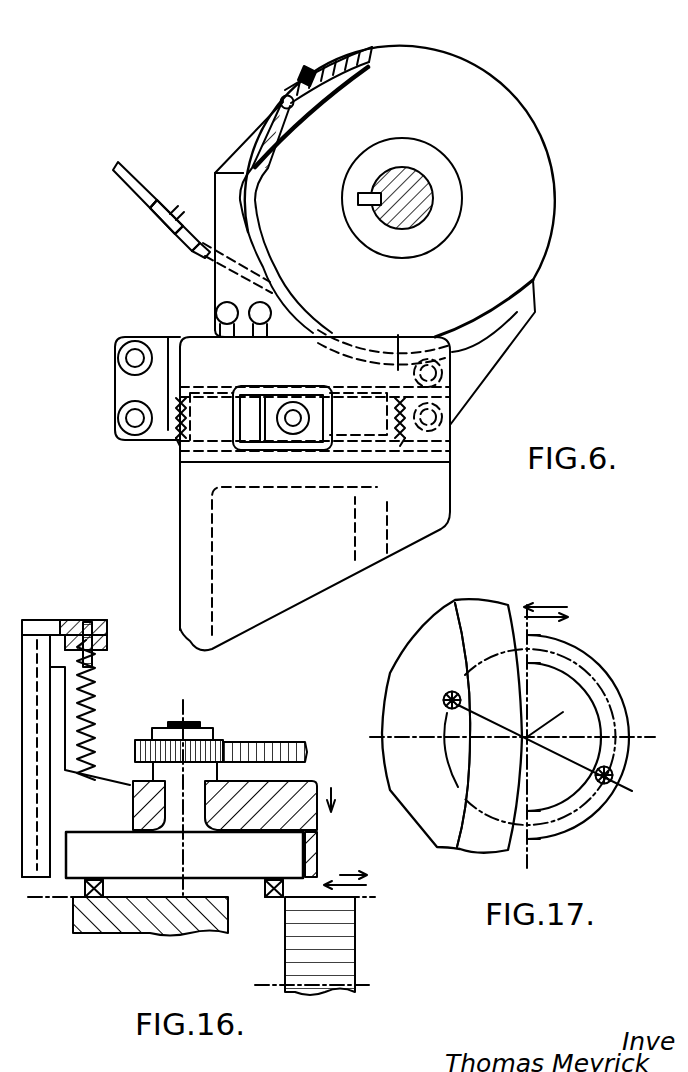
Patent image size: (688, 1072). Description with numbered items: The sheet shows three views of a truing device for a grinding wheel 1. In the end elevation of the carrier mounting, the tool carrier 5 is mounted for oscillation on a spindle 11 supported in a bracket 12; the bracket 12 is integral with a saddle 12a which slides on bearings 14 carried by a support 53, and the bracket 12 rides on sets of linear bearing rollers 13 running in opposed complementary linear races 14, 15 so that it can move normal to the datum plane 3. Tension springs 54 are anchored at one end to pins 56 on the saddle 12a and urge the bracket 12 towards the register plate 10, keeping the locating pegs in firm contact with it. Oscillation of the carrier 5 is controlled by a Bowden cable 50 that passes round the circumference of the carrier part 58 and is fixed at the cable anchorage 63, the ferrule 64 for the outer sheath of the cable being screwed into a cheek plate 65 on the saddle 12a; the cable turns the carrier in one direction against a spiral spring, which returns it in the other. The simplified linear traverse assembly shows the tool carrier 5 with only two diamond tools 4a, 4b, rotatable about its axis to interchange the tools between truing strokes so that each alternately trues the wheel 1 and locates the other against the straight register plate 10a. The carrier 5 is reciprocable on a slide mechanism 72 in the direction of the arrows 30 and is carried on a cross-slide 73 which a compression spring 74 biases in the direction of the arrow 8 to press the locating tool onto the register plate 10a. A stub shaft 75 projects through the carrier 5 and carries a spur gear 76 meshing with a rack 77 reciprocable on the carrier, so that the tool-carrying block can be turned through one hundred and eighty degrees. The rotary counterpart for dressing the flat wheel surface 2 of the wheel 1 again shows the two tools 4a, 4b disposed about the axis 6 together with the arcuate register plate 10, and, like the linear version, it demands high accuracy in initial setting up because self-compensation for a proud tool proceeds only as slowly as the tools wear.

In FIG. 6, the tool carrier 5 is at (522, 97).
In FIG. 16, the tool carrier 5 is at (184, 855).
In FIG. 6, the spindle 11 is at (432, 196).
In FIG. 6, the bracket 12 is at (258, 133).
In FIG. 6, the saddle 12a is at (128, 378).
In FIG. 6, the cheek plate 65 is at (213, 178).
In FIG. 6, the carrier part 58 is at (341, 65).
In FIG. 6, the cable anchorage 63 is at (280, 100).
In FIG. 6, the Bowden cable 50 is at (140, 188).
In FIG. 6, the ferrule 64 is at (175, 218).
In FIG. 6, the tension springs 54 is at (258, 302).
In FIG. 6, the pins 56 is at (260, 330).
In FIG. 6, the support 53 is at (192, 538).
In FIG. 6, the linear race 15 is at (186, 418).
In FIG. 6, the linear bearing rollers 13 is at (178, 404).
In FIG. 6, the linear race 14 is at (176, 440).
In FIG. 16, the slide mechanism 72 is at (28, 640).
In FIG. 16, the compression spring 74 is at (97, 722).
In FIG. 16, the axis 6 is at (185, 715).
In FIG. 17, the axis 6 is at (550, 713).
In FIG. 16, the spur gear 76 is at (223, 740).
In FIG. 16, the rack 77 is at (266, 742).
In FIG. 16, the stub shaft 75 is at (175, 823).
In FIG. 16, the cross-slide 73 is at (60, 866).
In FIG. 16, the diamond tool 4b is at (96, 880).
In FIG. 17, the diamond tool 4b is at (612, 774).
In FIG. 16, the diamond tool 4a is at (272, 898).
In FIG. 17, the diamond tool 4a is at (447, 692).
In FIG. 16, the datum plane 3 is at (201, 896).
In FIG. 16, the register plate 10a is at (152, 898).
In FIG. 16, the grinding wheel 1 is at (293, 948).
In FIG. 17, the grinding wheel 1 is at (393, 690).
In FIG. 16, the arrow 8 is at (333, 790).
In FIG. 16, the arrows 30 is at (340, 874).
In FIG. 17, the wheel surface 2 is at (475, 725).
In FIG. 17, the register plate 10 is at (605, 686).